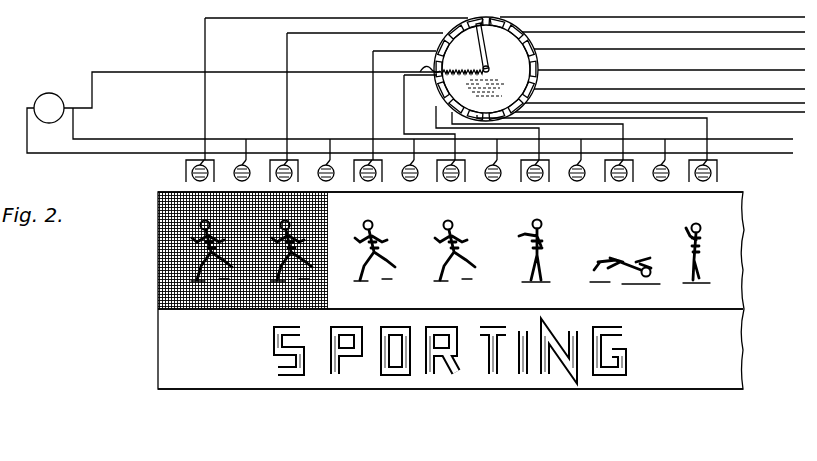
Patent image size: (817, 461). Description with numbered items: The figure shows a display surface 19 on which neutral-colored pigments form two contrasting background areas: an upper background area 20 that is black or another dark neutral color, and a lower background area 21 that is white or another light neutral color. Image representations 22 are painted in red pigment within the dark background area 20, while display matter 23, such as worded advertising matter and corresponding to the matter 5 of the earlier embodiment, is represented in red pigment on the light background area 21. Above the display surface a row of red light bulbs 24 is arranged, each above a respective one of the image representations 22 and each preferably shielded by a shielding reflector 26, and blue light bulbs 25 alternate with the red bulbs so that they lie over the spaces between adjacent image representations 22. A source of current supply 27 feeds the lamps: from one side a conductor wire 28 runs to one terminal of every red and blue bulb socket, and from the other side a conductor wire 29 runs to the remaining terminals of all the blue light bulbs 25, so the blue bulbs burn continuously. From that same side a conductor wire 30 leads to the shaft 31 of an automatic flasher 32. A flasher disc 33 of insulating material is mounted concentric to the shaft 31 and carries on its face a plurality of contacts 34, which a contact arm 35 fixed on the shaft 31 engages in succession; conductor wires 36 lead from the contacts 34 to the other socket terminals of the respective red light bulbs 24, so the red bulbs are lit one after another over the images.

The worded advertising matter 5 is at (316, 80).
The display surface 19 is at (733, 339).
The background area 20 is at (738, 217).
The background area 21 is at (731, 372).
The image representations 22 is at (705, 258).
The display matter 23 is at (272, 340).
The red light bulbs 24 is at (213, 160).
The blue light bulbs 25 is at (246, 165).
The shielding reflectors 26 is at (187, 170).
The source of current supply 27 is at (53, 93).
The conductor wire 28 is at (53, 155).
The conductor wire 29 is at (138, 139).
The conductor wire 30 is at (160, 72).
The shaft 31 is at (495, 69).
The automatic flasher 32 is at (521, 50).
The flasher disc 33 is at (463, 43).
The contacts 34 is at (492, 21).
The contact arm 35 is at (480, 56).
The conductor wires 36 is at (383, 18).